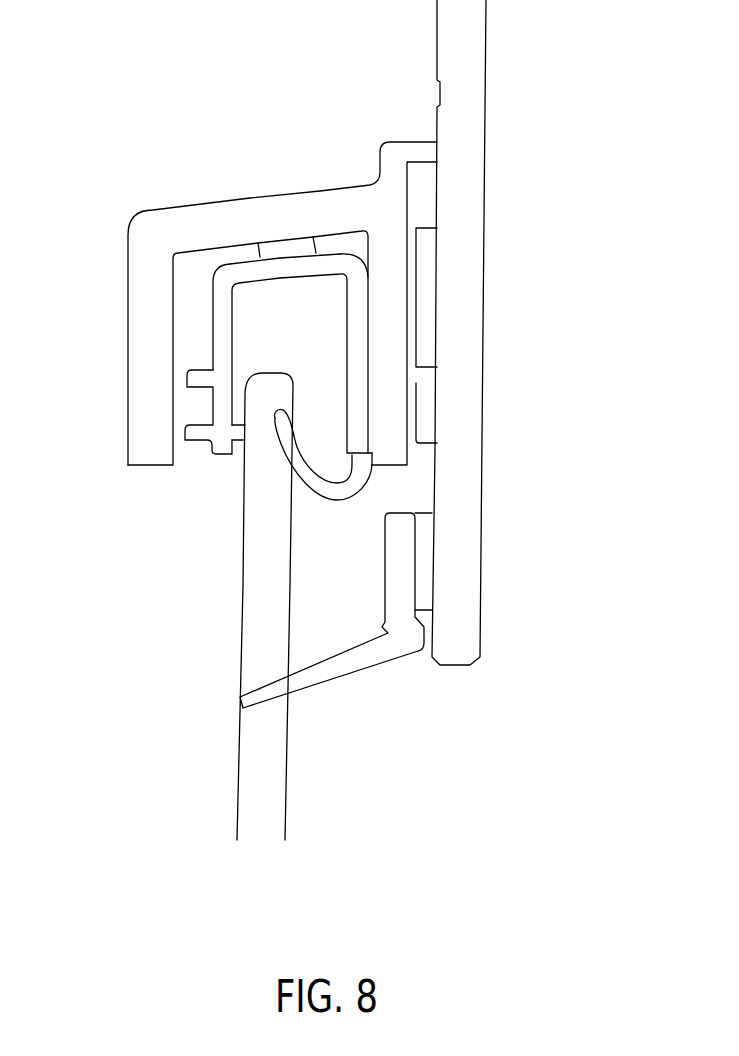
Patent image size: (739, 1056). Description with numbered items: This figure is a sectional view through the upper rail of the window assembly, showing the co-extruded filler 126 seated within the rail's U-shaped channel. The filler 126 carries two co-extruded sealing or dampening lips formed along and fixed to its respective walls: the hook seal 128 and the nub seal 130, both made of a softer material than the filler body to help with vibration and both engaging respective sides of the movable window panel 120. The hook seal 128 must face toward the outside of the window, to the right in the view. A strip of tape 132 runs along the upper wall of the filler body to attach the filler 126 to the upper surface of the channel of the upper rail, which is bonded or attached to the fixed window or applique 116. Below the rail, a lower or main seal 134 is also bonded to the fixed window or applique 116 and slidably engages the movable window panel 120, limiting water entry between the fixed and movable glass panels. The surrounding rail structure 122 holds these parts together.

The fixed window or applique 116 is at (473, 219).
The movable window panel 120 is at (245, 797).
The bracket 122 is at (104, 264).
The co-extruded filler 126 is at (214, 254).
The hook seal 128 is at (318, 493).
The nub seal 130 is at (237, 443).
The strip of tape 132 is at (287, 235).
The lower or main sealing element 134 is at (337, 668).